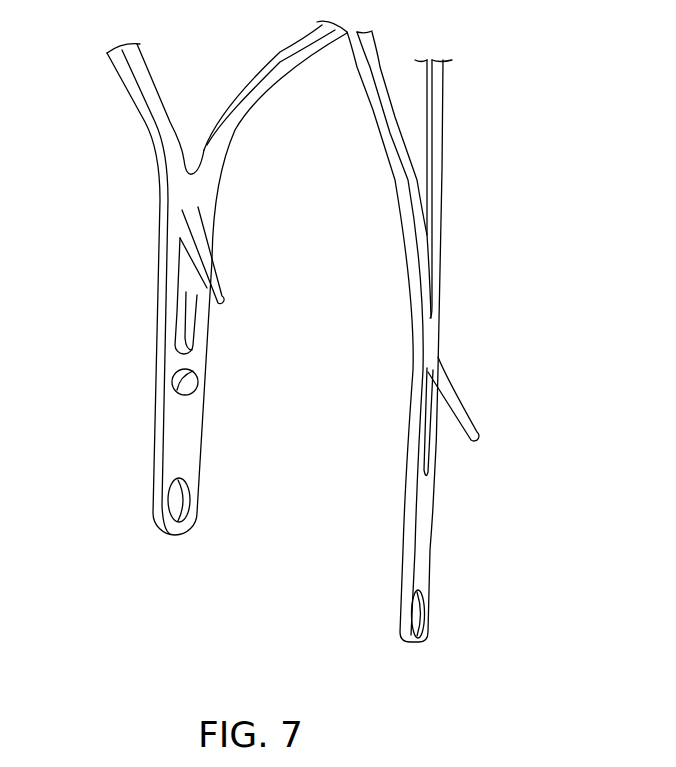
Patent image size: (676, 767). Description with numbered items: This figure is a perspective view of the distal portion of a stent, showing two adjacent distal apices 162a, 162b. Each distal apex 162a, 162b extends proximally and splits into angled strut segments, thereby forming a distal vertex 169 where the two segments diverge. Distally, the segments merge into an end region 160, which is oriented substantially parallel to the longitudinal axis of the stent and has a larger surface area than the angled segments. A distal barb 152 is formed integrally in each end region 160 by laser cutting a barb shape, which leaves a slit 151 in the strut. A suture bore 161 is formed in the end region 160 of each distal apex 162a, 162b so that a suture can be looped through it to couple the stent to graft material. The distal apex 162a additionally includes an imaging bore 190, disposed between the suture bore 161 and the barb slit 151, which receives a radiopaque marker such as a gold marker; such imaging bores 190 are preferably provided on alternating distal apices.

The slit 151 is at (180, 313).
The distal barb 152 is at (208, 278).
The end region 160 is at (185, 433).
The suture bore 161 is at (175, 505).
The distal apex 162a is at (182, 553).
The distal apex 162b is at (435, 567).
The distal vertex 169 is at (190, 172).
The imaging bore 190 is at (173, 383).